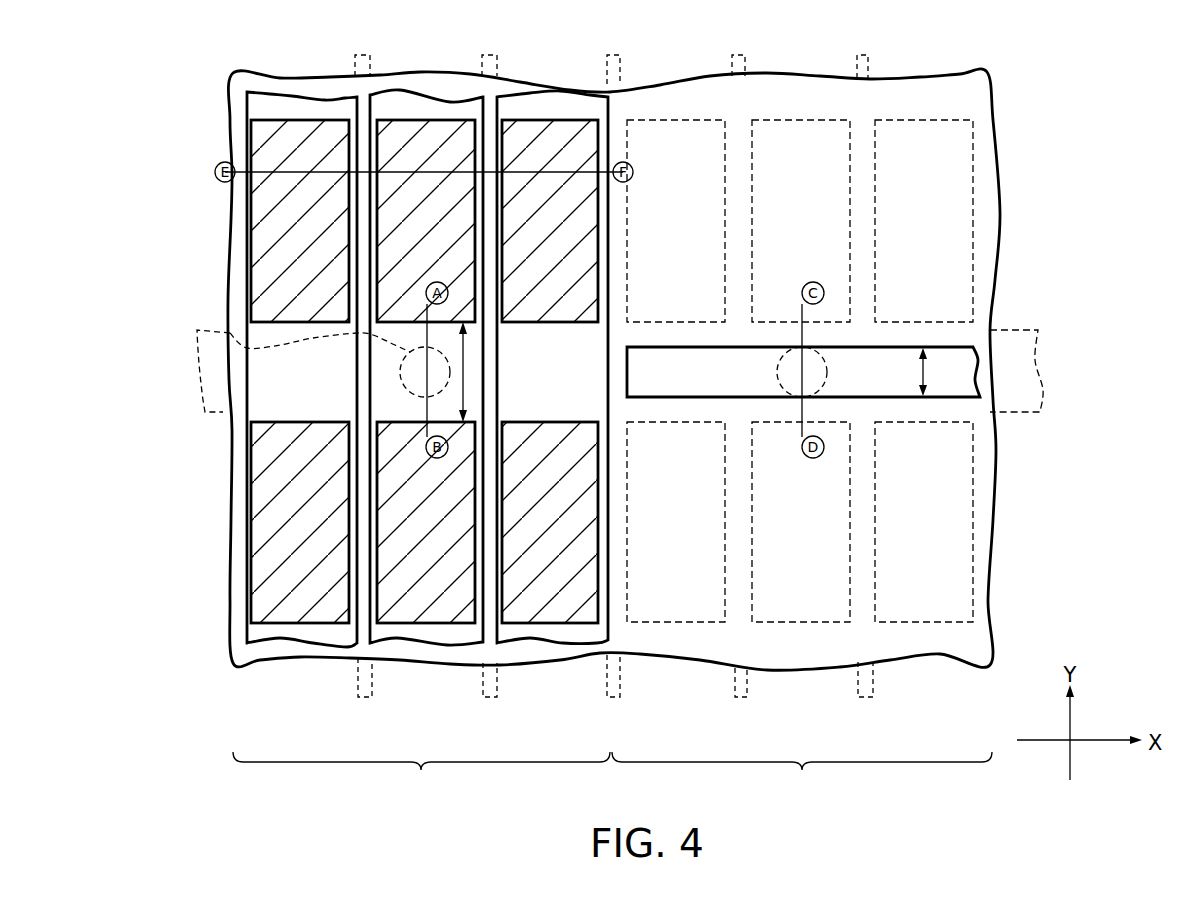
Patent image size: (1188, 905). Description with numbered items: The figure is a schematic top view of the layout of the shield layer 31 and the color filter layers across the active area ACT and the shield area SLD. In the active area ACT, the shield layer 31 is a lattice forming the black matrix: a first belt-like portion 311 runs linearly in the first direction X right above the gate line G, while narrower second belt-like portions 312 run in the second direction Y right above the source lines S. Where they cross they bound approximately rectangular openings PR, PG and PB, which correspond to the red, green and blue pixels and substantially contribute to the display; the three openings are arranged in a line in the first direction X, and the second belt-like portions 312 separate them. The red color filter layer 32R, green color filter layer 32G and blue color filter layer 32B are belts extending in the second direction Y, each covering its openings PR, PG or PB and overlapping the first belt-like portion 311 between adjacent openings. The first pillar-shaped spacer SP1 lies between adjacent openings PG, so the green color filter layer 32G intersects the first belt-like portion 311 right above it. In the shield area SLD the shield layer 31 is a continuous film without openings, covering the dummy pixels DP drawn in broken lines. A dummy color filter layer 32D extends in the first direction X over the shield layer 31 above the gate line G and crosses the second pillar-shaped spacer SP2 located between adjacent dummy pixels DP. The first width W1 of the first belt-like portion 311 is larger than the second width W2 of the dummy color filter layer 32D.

The shield layer 31 is at (238, 665).
The first belt-like portion 311 is at (277, 383).
The second belt-like portion 312 is at (356, 566).
The red color filter layer 32R is at (300, 92).
The green color filter layer 32G is at (423, 92).
The blue color filter layer 32B is at (550, 96).
The dummy color filter layer 32D is at (963, 347).
The opening PR is at (300, 371).
The opening PG is at (426, 371).
The opening PB is at (550, 371).
The dummy pixel DP is at (682, 117).
The source line S is at (365, 697).
The gate line G is at (196, 378).
The first pillar-shaped spacer SP1 is at (222, 330).
The second pillar-shaped spacer SP2 is at (827, 375).
The first width W1 is at (467, 370).
The second width W2 is at (944, 372).
The active area ACT is at (421, 776).
The shield area SLD is at (802, 776).